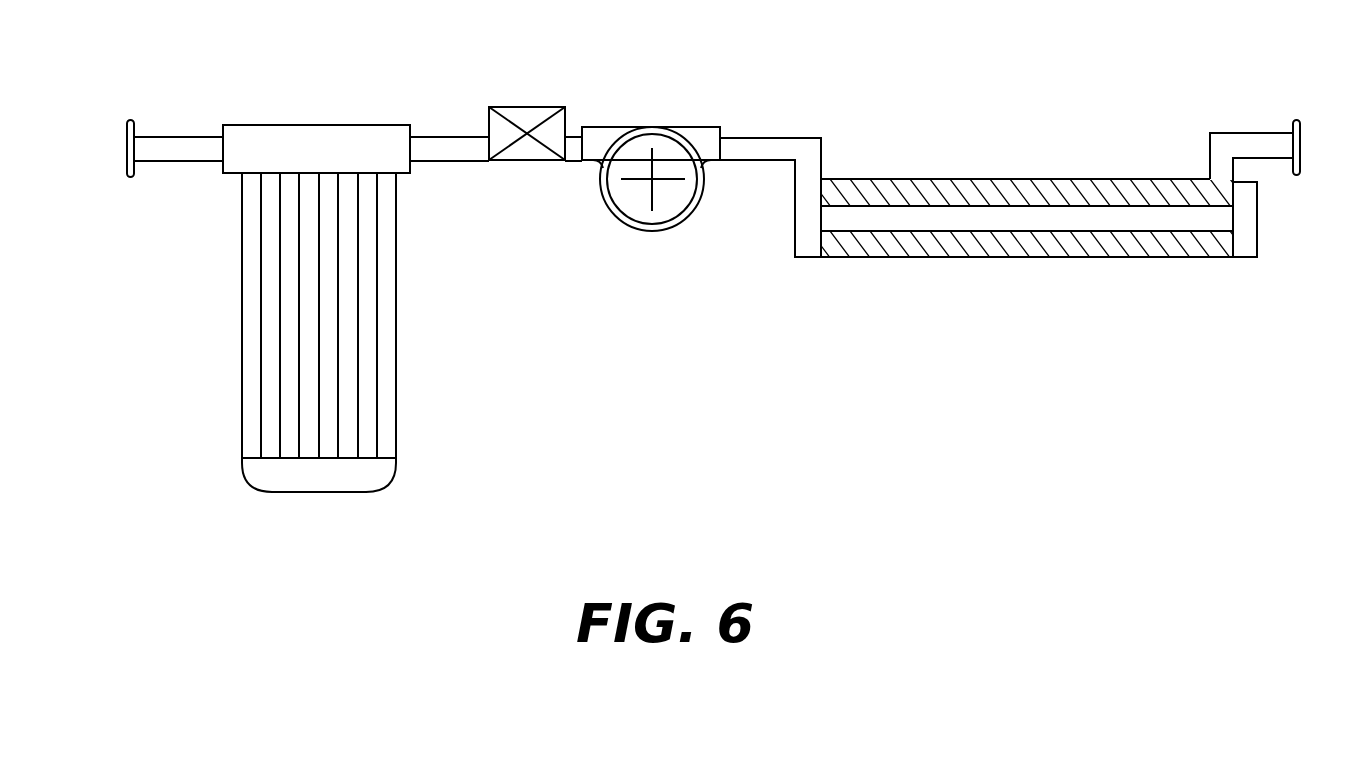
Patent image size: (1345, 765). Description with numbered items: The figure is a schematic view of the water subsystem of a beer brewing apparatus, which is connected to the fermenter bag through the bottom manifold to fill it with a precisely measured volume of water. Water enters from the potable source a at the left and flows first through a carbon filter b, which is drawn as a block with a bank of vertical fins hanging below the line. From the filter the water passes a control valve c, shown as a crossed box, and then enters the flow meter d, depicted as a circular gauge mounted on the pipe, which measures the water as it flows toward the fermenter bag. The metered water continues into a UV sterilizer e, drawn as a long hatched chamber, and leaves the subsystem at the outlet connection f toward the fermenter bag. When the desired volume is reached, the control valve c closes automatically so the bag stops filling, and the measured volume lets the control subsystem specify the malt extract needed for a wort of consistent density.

The potable source a is at (132, 98).
The carbon filter b is at (420, 401).
The control valve c is at (520, 70).
The flow meter d is at (662, 100).
The UV sterilizer e is at (1019, 153).
The outlet port connector f is at (1300, 90).